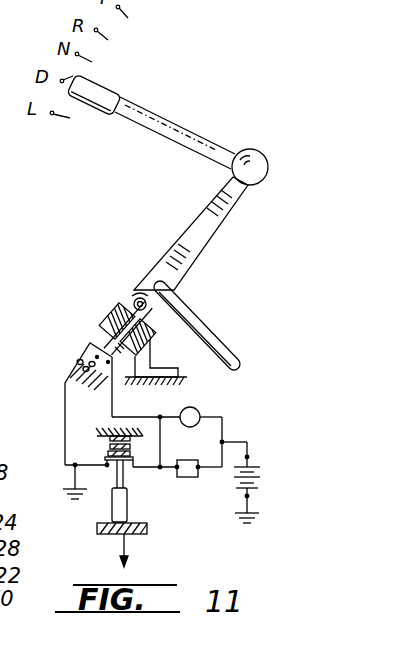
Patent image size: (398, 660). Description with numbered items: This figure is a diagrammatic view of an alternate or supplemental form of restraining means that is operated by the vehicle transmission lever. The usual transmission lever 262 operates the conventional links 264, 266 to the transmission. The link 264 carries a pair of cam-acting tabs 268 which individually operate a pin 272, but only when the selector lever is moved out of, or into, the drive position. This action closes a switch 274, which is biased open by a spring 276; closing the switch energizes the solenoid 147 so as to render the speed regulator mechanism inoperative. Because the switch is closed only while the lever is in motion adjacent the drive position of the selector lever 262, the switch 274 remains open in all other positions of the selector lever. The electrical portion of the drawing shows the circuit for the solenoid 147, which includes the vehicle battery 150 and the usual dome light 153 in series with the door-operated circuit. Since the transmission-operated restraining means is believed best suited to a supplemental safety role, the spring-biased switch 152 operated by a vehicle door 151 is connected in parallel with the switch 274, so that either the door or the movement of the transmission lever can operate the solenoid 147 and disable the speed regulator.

The transmission lever 262 is at (184, 130).
The link 264 is at (199, 217).
The link 266 is at (203, 332).
The cam-acting tabs 268 is at (150, 297).
The pin 272 is at (134, 306).
The switch 274 is at (100, 349).
The spring 276 is at (100, 358).
The spring-biased switch 152 is at (107, 454).
The dome light 153 is at (195, 410).
The solenoid 147 is at (181, 478).
The vehicle battery 150 is at (245, 498).
The door 151 is at (108, 535).